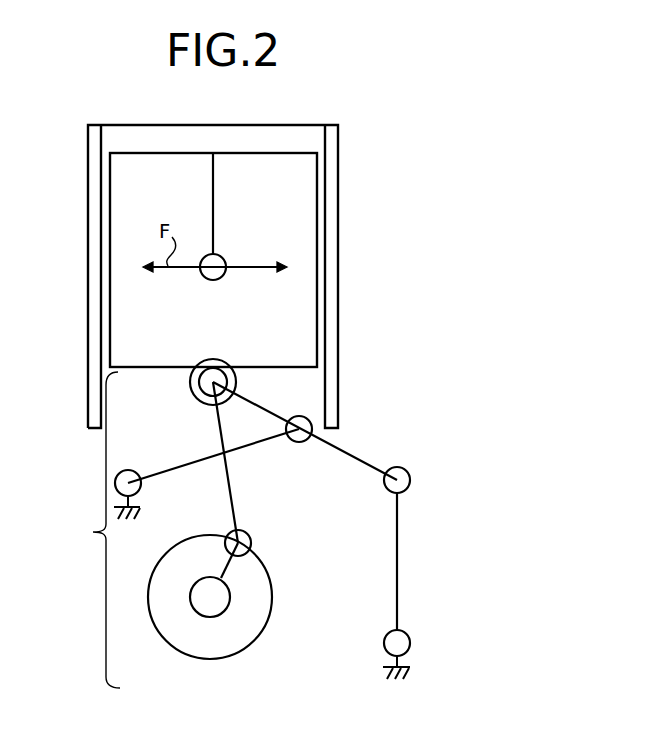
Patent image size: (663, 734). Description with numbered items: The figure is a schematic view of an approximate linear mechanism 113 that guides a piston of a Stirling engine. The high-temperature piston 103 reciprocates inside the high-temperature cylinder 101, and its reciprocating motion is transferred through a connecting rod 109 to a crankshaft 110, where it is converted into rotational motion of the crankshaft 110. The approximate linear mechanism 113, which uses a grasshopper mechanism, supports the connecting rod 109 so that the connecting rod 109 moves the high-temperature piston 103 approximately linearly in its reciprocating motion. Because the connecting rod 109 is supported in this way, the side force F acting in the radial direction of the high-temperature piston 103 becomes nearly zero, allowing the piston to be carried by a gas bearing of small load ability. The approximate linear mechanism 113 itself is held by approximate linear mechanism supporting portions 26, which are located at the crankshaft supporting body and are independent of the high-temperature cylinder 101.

The high-temperature cylinder 101 is at (333, 408).
The high-temperature piston 103 is at (318, 237).
The connecting rod 109 is at (235, 498).
The crankshaft 110 is at (211, 607).
The approximate linear mechanism supporting portion 26 is at (138, 512).
The approximate linear mechanism 113 is at (93, 531).